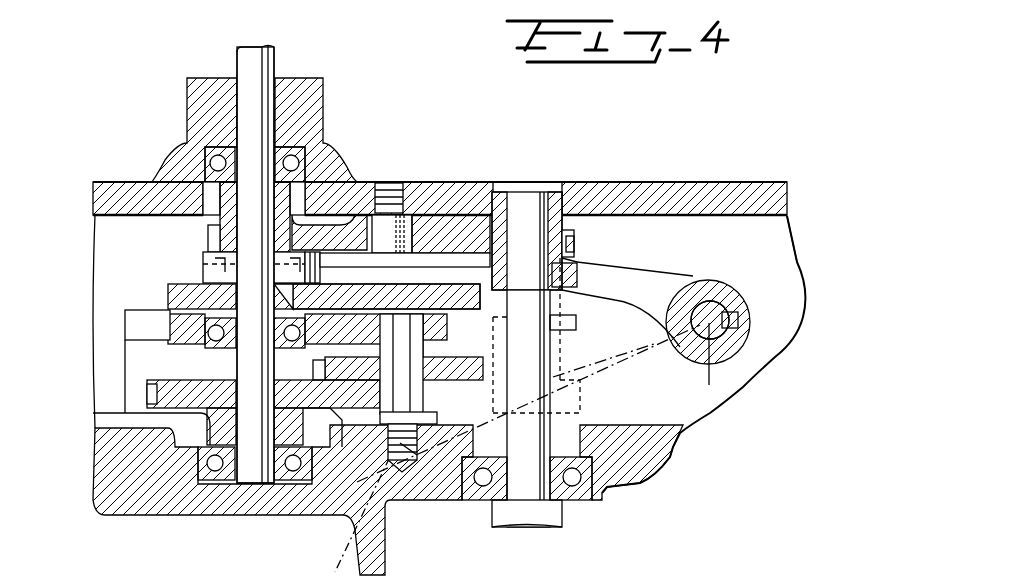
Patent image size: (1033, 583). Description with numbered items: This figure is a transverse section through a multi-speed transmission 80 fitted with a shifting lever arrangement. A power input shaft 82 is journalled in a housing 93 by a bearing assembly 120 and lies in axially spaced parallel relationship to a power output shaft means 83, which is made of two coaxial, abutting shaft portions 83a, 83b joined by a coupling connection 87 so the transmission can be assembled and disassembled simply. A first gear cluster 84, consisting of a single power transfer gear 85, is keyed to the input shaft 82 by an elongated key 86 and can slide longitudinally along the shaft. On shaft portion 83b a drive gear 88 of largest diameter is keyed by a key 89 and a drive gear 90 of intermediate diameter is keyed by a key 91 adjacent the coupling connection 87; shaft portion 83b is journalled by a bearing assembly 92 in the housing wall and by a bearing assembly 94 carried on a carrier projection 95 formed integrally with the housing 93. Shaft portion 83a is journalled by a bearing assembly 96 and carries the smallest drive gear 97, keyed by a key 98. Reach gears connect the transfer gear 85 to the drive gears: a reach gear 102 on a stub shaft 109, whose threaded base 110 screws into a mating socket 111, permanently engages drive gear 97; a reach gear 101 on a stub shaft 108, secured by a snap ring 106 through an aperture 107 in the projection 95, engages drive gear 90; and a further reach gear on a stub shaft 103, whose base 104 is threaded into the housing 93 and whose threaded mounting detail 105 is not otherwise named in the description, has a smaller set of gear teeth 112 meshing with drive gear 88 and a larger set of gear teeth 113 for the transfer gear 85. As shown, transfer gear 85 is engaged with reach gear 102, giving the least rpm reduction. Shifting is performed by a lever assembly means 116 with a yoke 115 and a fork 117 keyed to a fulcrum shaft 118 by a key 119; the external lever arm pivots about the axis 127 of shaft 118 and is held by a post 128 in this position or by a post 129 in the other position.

The transmission 80 is at (624, 140).
The power input shaft 82 is at (525, 200).
The power output shaft means 83 is at (280, 57).
The shaft portion 83a is at (252, 78).
The shaft portion 83b is at (250, 482).
The first gear cluster 84 is at (580, 250).
The power transfer gear 85 is at (576, 244).
The elongated key 86 is at (565, 324).
The coupling connection 87 is at (205, 272).
The drive gear 88 is at (147, 401).
The key 89 is at (310, 484).
The drive gear 90 is at (168, 296).
The key 91 is at (312, 284).
The bearing assembly 92 is at (216, 482).
The housing 93 is at (120, 487).
The bearing assembly 94 is at (200, 343).
The carrier projection 95 is at (130, 326).
The bearing assembly 96 is at (210, 158).
The drive gear 97 is at (208, 242).
The key 98 is at (318, 162).
The reach gear 101 is at (372, 292).
The reach gear 102 is at (474, 263).
The stub shaft 103 is at (420, 388).
The base 104 is at (400, 470).
The screw head 105 is at (420, 450).
The snap ring 106 is at (405, 360).
The aperture 107 is at (420, 345).
The stub shaft 108 is at (412, 327).
The stub shaft 109 is at (428, 240).
The threaded base 110 is at (388, 200).
The mating socket 111 is at (395, 230).
The set of gear teeth 112 is at (437, 408).
The set of gear teeth 113 is at (578, 370).
The yoke 115 is at (580, 276).
The lever assembly means 116 is at (668, 248).
The fork 117 is at (660, 279).
The fulcrum shaft 118 is at (716, 301).
The key 119 is at (740, 316).
The bearing assembly 120 is at (590, 500).
The axis 127 is at (700, 366).
The post 128 is at (385, 181).
The post 129 is at (349, 511).